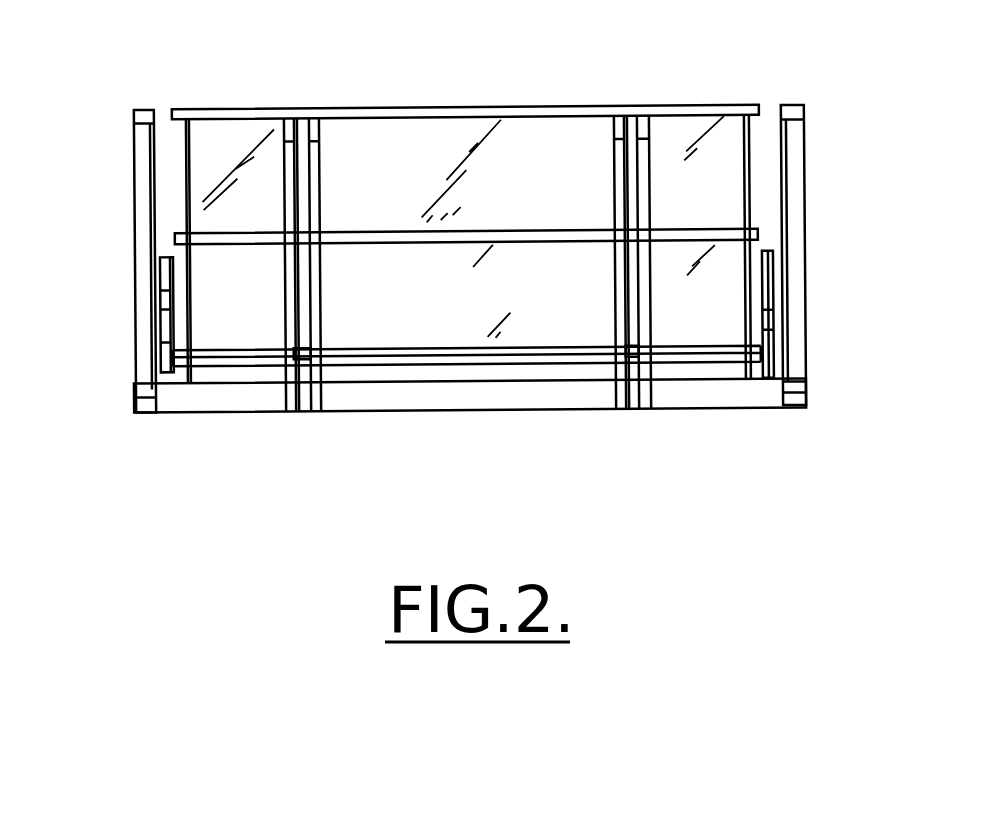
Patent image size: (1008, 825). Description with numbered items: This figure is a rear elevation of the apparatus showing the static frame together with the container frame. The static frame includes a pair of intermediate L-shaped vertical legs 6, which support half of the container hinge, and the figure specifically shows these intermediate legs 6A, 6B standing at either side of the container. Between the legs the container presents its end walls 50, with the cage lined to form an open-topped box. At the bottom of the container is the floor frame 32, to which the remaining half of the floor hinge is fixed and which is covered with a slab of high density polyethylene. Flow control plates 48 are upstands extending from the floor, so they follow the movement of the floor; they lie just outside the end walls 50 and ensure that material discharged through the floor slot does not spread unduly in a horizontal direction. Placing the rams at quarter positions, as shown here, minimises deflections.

The end wall 50 is at (187, 148).
The intermediate L-shaped vertical leg 6 is at (145, 217).
The intermediate leg 6A is at (303, 193).
The intermediate leg 6B is at (630, 180).
The flow control plate 48 is at (160, 320).
The floor frame 32 is at (178, 375).